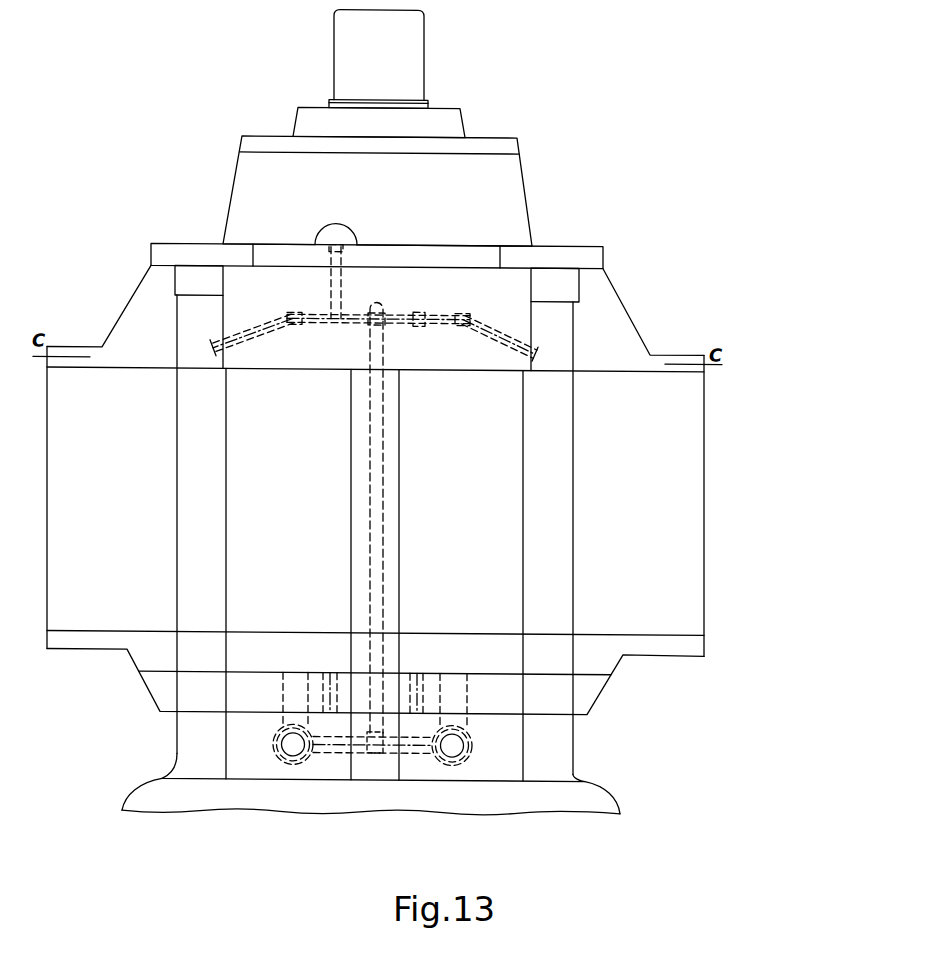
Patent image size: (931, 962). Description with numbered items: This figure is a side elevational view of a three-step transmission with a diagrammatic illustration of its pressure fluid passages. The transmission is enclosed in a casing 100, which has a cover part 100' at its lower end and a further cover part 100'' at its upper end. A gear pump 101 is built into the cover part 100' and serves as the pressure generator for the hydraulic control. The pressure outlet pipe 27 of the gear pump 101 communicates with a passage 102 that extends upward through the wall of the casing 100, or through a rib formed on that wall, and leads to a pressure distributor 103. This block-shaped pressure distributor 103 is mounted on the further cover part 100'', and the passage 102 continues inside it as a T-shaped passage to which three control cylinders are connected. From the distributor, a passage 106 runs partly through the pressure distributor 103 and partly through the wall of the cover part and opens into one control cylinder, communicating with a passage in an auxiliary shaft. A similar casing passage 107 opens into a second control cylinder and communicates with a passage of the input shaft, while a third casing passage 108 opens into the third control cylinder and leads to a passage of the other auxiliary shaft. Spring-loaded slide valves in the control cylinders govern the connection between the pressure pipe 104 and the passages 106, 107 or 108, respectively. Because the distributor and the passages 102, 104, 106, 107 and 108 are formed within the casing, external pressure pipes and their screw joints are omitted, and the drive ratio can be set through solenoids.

The casing 100 is at (385, 530).
The cover part 100' is at (375, 689).
The further cover part 100'' is at (375, 245).
The gear pump 101 is at (410, 700).
The passage 102 is at (378, 565).
The pressure distributor 103 is at (523, 277).
The pressure pipe 104 is at (442, 315).
The passage 106 is at (508, 345).
The casing passage 107 is at (330, 280).
The casing passage 108 is at (253, 342).
The pressure outlet pipe 27 is at (373, 753).